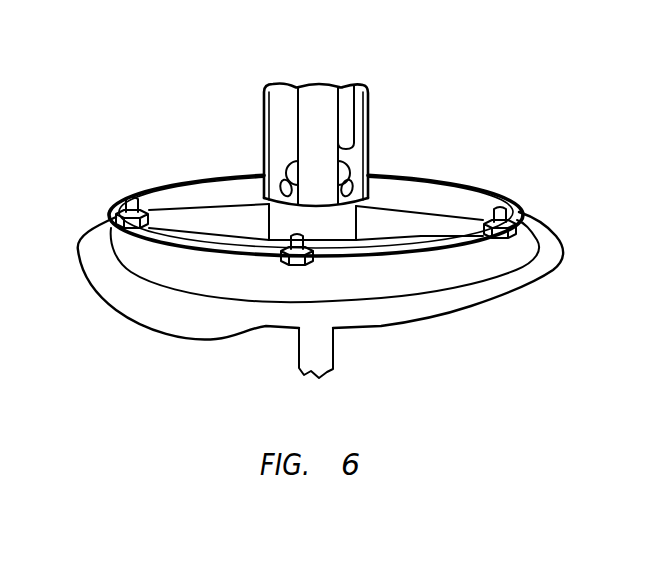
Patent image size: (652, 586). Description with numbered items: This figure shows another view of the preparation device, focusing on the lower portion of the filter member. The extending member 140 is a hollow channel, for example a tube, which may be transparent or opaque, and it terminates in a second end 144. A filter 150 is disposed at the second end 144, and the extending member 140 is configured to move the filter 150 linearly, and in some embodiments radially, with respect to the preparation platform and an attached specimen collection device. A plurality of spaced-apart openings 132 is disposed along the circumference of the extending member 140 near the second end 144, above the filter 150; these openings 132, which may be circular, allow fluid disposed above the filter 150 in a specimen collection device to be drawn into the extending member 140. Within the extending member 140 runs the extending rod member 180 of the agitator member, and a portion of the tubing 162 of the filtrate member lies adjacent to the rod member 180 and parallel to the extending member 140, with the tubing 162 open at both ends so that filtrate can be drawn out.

The extending member 140 is at (318, 134).
The extending rod member 180 is at (296, 130).
The second end 144 is at (263, 188).
The tubing 162 is at (367, 112).
The openings 132 is at (418, 203).
The filter 150 is at (452, 300).